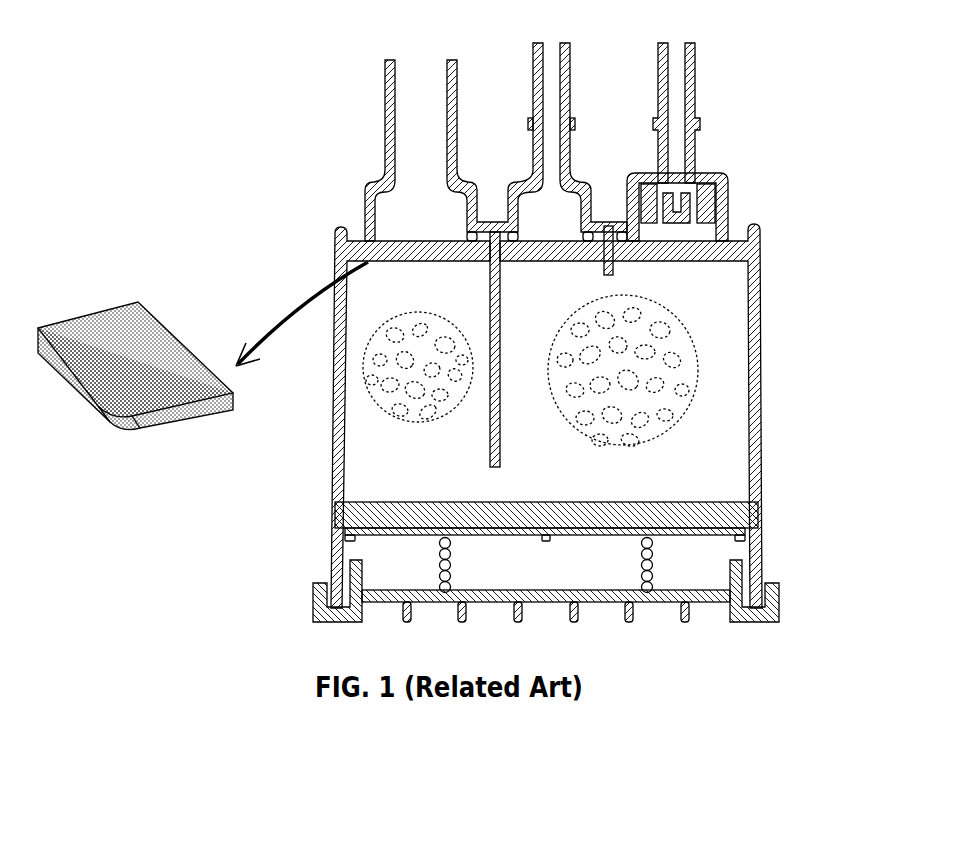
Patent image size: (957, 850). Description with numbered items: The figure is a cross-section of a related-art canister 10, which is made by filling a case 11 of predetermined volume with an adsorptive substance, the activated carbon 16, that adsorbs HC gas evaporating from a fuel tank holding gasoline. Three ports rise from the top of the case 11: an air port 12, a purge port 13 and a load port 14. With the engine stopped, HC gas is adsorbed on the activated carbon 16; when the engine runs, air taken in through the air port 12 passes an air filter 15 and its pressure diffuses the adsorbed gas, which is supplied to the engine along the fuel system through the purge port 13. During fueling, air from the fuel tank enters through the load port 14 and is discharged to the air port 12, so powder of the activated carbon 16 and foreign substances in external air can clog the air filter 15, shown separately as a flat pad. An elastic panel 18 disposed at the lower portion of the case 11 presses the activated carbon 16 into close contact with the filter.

The canister 10 is at (756, 192).
The case 11 is at (760, 400).
The air port 12 is at (383, 108).
The purge port 13 is at (570, 87).
The load port 14 is at (695, 83).
The air filter 15 is at (92, 322).
The activated carbon 16 is at (673, 348).
The elastic panel 18 is at (727, 507).